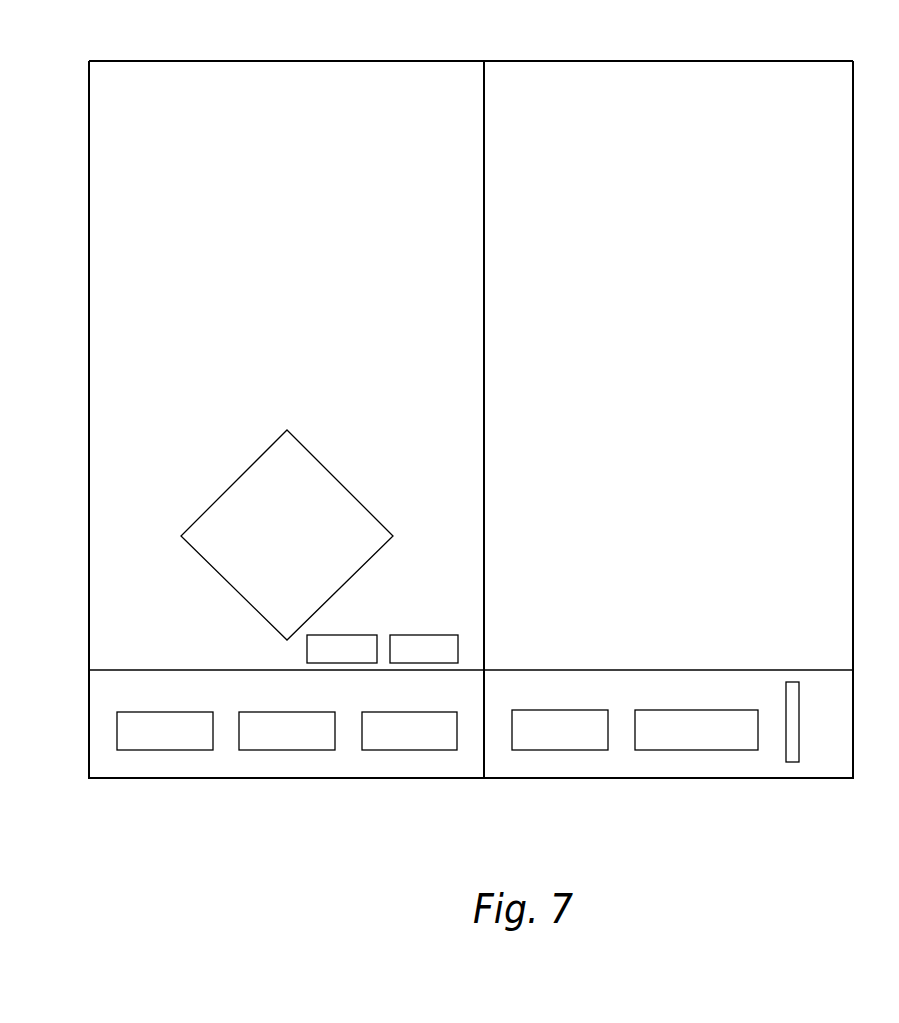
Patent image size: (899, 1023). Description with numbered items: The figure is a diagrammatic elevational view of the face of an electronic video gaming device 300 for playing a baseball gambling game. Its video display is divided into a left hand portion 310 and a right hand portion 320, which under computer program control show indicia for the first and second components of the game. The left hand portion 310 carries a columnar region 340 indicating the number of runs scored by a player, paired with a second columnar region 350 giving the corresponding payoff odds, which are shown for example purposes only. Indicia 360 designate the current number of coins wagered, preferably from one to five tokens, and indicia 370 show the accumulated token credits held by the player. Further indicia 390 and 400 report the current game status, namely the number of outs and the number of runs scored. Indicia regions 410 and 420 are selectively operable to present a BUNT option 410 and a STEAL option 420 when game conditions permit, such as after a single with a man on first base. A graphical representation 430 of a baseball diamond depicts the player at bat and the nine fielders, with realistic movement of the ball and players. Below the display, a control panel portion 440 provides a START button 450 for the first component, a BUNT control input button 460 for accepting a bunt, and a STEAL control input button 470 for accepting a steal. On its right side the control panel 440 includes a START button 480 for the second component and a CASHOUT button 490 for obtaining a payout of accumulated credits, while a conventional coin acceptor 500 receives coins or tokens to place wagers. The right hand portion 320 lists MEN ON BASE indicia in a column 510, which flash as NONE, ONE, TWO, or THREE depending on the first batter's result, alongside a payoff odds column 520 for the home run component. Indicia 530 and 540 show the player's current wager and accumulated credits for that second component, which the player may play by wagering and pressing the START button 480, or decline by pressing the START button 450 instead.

The electronic video gaming device 300 is at (458, 781).
The left hand portion of the video display 310 is at (292, 61).
The right hand portion of the video display 320 is at (690, 61).
The columnar region 340 is at (131, 110).
The second columnar region 350 is at (358, 73).
The indicia designating coins wagered 360 is at (110, 272).
The indicia representative of token credits 370 is at (110, 295).
The indicia of game status 390 is at (110, 618).
The indicia of game status 400 is at (110, 641).
The BUNT option indicia region 410 is at (347, 635).
The STEAL option indicia region 420 is at (416, 635).
The graphical representation of a baseball diamond 430 is at (237, 484).
The control panel portion 440 is at (89, 718).
The START button 450 is at (162, 748).
The BUNT control input button 460 is at (284, 748).
The STEAL control input button 470 is at (406, 748).
The START button 480 is at (557, 748).
The CASHOUT button 490 is at (694, 748).
The coin acceptor 500 is at (796, 750).
The MEN ON BASE column 510 is at (527, 108).
The payoff odds column 520 is at (746, 108).
The wager indicia 530 is at (617, 279).
The accumulated credits indicia 540 is at (617, 303).